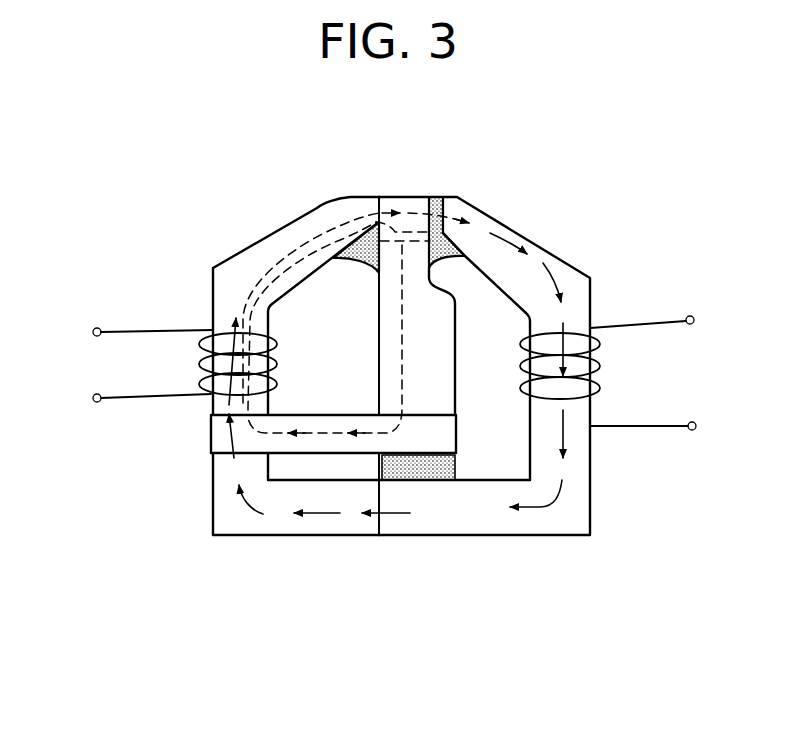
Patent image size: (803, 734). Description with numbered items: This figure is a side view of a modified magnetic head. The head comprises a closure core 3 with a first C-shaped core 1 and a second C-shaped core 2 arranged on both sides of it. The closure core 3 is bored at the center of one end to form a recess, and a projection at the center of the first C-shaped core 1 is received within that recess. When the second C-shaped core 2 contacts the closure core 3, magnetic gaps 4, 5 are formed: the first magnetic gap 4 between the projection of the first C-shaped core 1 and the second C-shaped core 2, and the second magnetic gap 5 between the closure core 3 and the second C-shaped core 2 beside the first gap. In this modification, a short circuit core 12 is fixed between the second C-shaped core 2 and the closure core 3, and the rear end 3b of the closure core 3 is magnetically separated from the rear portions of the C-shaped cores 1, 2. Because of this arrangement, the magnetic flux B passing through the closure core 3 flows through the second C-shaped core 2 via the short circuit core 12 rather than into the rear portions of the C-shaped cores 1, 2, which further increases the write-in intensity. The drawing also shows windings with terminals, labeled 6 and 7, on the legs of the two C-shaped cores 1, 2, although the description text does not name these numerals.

The first C-shaped core 1 is at (567, 257).
The second C-shaped core 2 is at (243, 252).
The closure core 3 is at (446, 345).
The rear end of the closure core 3b is at (442, 458).
The magnetic gap 4 is at (378, 197).
The magnetic gap 5 is at (447, 232).
The coil 6 is at (655, 427).
The coil 7 is at (140, 402).
The short circuit core 12 is at (296, 445).
The magnetic flux B is at (547, 509).